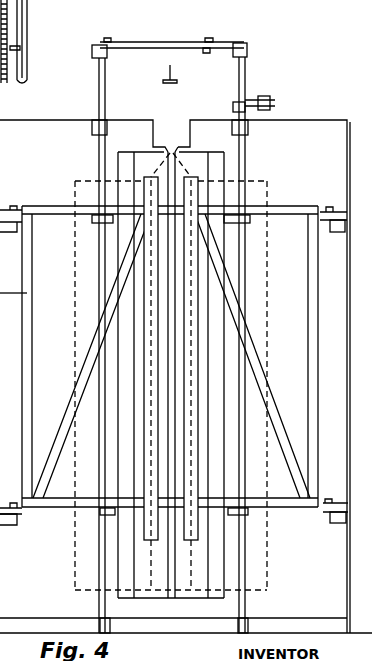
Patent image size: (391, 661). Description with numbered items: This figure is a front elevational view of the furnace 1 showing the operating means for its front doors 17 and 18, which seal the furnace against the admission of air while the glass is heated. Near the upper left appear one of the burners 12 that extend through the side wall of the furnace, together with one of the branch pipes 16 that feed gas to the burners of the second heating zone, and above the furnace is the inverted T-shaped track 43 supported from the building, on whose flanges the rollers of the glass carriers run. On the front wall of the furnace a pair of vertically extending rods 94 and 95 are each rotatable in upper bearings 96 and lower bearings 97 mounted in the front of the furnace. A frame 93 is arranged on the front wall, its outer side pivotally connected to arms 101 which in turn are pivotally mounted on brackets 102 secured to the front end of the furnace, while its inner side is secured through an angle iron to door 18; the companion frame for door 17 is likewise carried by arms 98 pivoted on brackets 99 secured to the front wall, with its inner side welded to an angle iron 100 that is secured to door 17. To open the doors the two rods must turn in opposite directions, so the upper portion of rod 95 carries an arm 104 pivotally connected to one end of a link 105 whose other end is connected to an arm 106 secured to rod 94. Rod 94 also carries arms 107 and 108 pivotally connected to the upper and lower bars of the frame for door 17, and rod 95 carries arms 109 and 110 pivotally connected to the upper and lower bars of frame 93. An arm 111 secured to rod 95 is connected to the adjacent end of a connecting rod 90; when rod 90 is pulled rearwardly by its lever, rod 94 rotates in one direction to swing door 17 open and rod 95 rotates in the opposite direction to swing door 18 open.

The furnace 1 is at (333, 116).
The burners 12 is at (12, 27).
The branch pipes 16 is at (28, 38).
The front door 17 is at (162, 570).
The front door 18 is at (188, 577).
The inverted T-shaped track 43 is at (176, 72).
The connecting rod 90 is at (278, 100).
The frame 93 is at (317, 333).
The rod 94 is at (97, 95).
The rod 95 is at (245, 80).
The upper bearings 96 is at (88, 133).
The lower bearings 97 is at (97, 623).
The arms 98 is at (7, 210).
The brackets 99 is at (14, 525).
The angle iron 100 is at (143, 332).
The arms 101 is at (342, 212).
The brackets 102 is at (344, 228).
The arm 104 is at (232, 45).
The link 105 is at (160, 42).
The arm 106 is at (107, 51).
The arm 107 is at (98, 227).
The arm 108 is at (105, 517).
The arm 109 is at (245, 225).
The arm 110 is at (248, 517).
The arm 111 is at (232, 99).